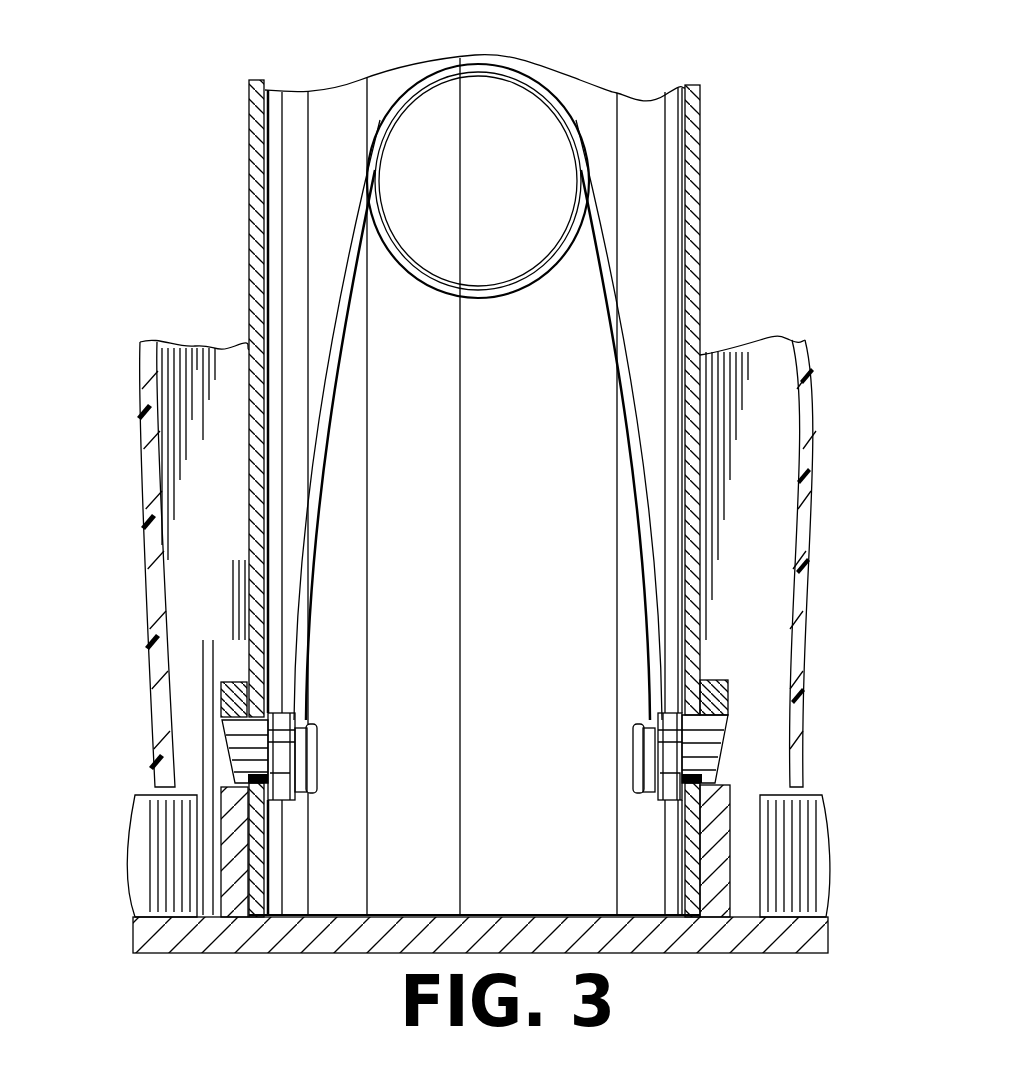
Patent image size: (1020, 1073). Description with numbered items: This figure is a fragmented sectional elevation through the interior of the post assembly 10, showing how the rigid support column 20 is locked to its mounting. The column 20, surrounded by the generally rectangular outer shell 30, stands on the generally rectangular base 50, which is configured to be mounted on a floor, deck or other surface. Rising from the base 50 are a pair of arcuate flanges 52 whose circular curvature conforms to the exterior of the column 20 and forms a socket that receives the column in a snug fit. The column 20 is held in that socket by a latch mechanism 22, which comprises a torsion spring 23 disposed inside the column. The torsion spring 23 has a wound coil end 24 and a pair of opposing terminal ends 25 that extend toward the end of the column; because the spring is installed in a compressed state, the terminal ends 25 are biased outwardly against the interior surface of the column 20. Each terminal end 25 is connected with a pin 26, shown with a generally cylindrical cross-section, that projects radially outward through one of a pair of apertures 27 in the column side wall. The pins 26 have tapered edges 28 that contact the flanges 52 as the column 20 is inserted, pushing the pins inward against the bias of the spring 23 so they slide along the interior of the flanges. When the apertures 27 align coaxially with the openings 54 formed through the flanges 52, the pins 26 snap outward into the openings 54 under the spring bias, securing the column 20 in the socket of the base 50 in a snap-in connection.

The post assembly 10 is at (126, 396).
The support column 20 is at (690, 298).
The latch mechanism 22 is at (618, 234).
The torsion spring 23 is at (632, 410).
The wound coil end 24 is at (546, 93).
The terminal ends 25 is at (300, 797).
The pins 26 is at (240, 735).
The apertures 27 is at (235, 810).
The tapered edges 28 is at (232, 758).
The shell 30 is at (800, 520).
The base 50 is at (797, 900).
The arcuate flanges 52 is at (235, 850).
The openings 54 is at (228, 683).